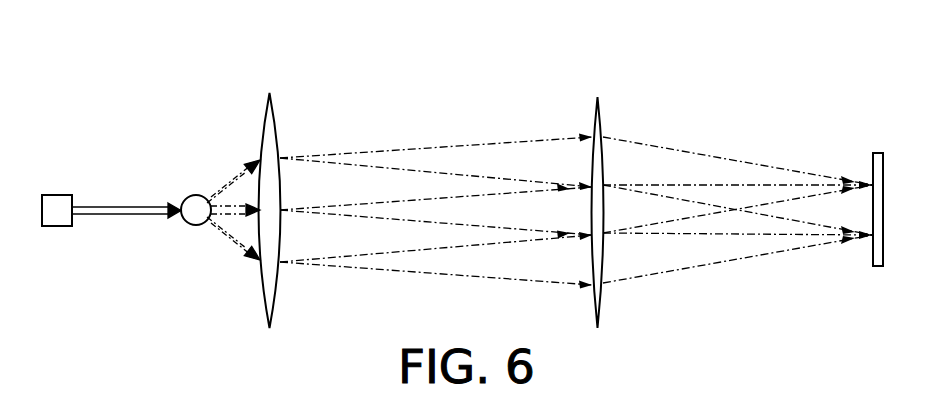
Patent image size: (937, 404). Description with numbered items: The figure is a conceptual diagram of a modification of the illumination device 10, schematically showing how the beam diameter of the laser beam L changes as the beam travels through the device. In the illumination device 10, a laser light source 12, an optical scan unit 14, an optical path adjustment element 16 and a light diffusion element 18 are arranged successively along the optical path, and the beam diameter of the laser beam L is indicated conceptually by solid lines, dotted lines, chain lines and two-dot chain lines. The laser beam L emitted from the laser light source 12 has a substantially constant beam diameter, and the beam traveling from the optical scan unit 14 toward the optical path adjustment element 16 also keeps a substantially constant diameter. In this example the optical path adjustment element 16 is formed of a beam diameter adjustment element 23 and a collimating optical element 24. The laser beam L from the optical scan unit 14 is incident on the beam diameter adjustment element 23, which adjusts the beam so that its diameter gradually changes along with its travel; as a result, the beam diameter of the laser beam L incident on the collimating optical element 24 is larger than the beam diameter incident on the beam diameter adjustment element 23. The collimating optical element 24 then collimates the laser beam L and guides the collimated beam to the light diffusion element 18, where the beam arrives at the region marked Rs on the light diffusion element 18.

The illumination device 10 is at (757, 82).
The laser light source 12 is at (59, 195).
The laser beam L is at (124, 207).
The optical scan unit 14 is at (194, 196).
The optical path adjustment element 16 is at (453, 182).
The beam diameter adjustment element 23 is at (266, 92).
The collimating optical element 24 is at (596, 96).
The light diffusion element 18 is at (876, 152).
The irradiation region Rs is at (866, 244).